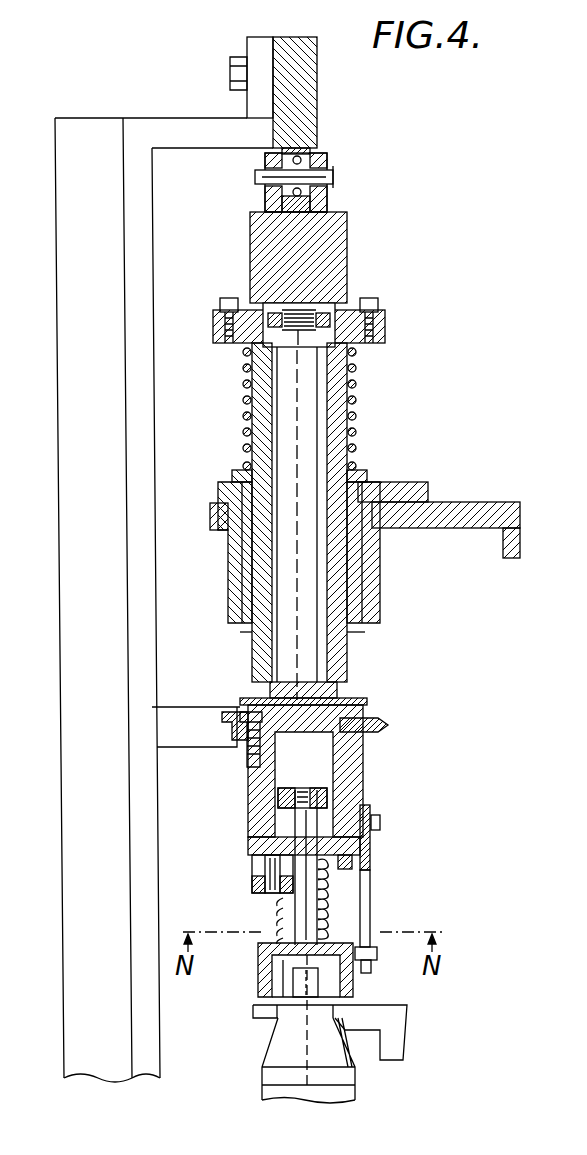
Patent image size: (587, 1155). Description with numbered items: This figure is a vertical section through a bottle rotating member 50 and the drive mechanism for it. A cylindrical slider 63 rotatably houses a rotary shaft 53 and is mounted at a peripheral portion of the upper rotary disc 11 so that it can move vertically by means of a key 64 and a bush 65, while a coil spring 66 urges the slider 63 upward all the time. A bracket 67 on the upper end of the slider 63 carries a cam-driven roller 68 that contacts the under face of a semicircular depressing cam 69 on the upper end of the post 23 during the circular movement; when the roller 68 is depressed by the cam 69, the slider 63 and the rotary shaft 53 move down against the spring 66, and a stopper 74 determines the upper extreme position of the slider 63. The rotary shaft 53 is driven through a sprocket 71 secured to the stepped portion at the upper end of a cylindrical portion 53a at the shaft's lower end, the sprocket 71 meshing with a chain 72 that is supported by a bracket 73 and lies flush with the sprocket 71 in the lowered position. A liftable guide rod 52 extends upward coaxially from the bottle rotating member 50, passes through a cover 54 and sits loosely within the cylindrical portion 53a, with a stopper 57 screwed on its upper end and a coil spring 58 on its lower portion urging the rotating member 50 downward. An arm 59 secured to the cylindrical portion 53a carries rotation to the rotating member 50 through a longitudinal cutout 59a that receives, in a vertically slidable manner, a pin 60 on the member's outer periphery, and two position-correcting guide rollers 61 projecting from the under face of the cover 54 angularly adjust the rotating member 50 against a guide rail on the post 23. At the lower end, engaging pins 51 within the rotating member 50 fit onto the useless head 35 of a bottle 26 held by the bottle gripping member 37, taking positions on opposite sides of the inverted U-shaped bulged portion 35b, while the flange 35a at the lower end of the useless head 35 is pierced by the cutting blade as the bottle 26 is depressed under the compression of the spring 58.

The upper rotary disc 11 is at (472, 510).
The post 23 is at (75, 524).
The bottle 26 is at (280, 1048).
The useless head 35 is at (292, 976).
The flange 35a is at (340, 1010).
The bulged portion 35b is at (300, 990).
The bottle gripping member 37 is at (385, 998).
The bottle rotating member 50 is at (330, 944).
The engaging pins 51 is at (272, 960).
The liftable guide rod 52 is at (308, 824).
The rotary shaft 53 is at (305, 582).
The cylindrical portion 53a is at (362, 750).
The cover 54 is at (256, 844).
The stopper 57 is at (280, 794).
The coil spring 58 is at (292, 906).
The arm 59 is at (370, 846).
The longitudinal cutout 59a is at (368, 890).
The pin 60 is at (373, 953).
The position-correcting guide rollers 61 is at (254, 872).
The cylindrical slider 63 is at (262, 395).
The key 64 is at (250, 566).
The bush 65 is at (214, 515).
The coil spring 66 is at (352, 378).
The bracket 67 is at (343, 256).
The cam-driven roller 68 is at (322, 193).
The semicircular depressing cam 69 is at (302, 92).
The sprocket 71 is at (243, 748).
The chain 72 is at (222, 714).
The bracket 73 is at (178, 735).
The stopper 74 is at (365, 700).